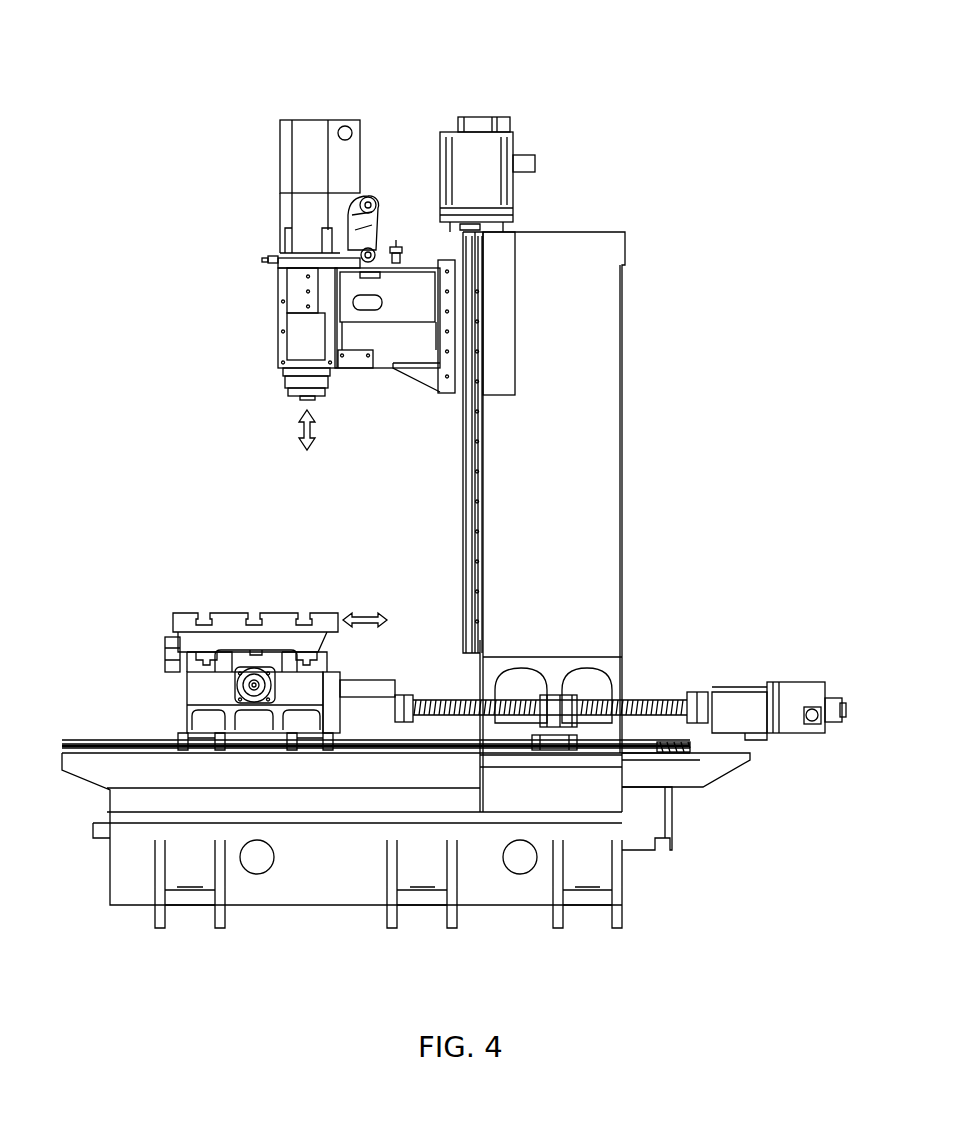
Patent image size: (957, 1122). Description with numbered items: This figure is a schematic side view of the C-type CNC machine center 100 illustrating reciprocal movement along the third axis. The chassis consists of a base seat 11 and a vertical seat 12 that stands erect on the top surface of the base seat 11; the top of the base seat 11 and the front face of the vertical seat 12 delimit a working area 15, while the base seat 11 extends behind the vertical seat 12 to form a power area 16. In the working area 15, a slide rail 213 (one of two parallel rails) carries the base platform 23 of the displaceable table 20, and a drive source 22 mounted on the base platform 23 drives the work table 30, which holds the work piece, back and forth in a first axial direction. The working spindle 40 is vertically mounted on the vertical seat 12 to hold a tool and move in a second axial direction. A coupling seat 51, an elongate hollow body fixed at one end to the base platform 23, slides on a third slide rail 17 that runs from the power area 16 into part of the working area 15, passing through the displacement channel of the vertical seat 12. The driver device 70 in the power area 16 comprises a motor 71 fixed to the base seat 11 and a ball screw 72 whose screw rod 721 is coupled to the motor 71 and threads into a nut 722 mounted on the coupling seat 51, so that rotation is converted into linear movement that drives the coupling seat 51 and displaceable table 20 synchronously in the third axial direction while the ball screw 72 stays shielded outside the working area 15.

The C-type CNC machine center 100 is at (727, 101).
The base seat 11 is at (355, 770).
The vertical seat 12 is at (623, 384).
The working area 15 is at (375, 592).
The power area 16 is at (750, 773).
The third slide rail 17 is at (673, 752).
The displaceable table 20 is at (250, 992).
The drive source 22 is at (254, 690).
The base platform 23 is at (185, 703).
The slide rail 213 is at (90, 752).
The work table 30 is at (188, 617).
The working spindle 40 is at (282, 375).
The coupling seat 51 is at (412, 690).
The driver device 70 is at (800, 558).
The motor 71 is at (797, 687).
The ball screw 72 is at (651, 693).
The screw rod 721 is at (670, 700).
The nut 722 is at (580, 690).